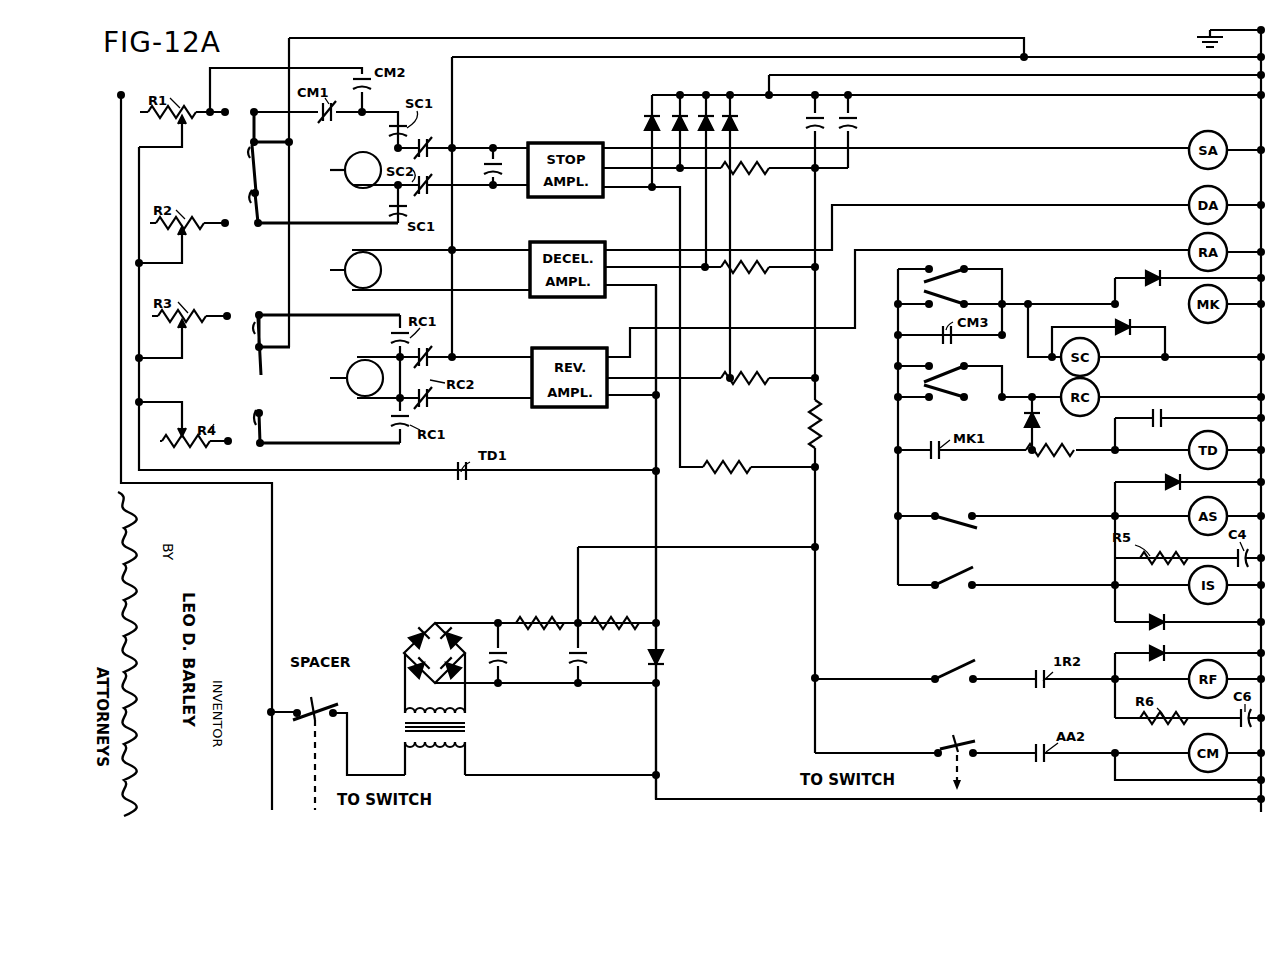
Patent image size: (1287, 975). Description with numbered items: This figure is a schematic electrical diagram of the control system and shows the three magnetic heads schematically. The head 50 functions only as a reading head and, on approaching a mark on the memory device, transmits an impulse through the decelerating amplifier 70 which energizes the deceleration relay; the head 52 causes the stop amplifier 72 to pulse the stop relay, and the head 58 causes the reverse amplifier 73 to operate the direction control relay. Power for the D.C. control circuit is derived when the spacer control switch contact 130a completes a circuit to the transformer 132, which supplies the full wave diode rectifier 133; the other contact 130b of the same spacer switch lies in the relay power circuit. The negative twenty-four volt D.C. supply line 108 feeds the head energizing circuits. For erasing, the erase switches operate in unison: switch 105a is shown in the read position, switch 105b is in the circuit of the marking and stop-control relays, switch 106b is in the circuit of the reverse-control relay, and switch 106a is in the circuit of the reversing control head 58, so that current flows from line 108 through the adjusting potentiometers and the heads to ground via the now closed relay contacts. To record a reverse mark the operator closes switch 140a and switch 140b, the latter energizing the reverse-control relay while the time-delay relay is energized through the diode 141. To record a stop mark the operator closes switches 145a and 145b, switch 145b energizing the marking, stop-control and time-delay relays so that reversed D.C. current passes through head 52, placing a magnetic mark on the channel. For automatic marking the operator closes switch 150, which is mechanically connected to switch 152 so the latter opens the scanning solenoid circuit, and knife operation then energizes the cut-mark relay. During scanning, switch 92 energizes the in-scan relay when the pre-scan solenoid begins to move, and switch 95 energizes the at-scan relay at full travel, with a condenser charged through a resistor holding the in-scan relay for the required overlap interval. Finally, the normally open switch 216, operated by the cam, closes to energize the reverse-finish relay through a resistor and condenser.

The reading head 50 is at (348, 283).
The stop head 52 is at (352, 184).
The reversing control head 58 is at (352, 371).
The decelerating amplifier 70 is at (581, 242).
The stop amplifier 72 is at (587, 143).
The reverse amplifier 73 is at (584, 348).
The switch 92 is at (955, 578).
The switch 95 is at (955, 515).
The erase switch 105a is at (250, 215).
The erase switch 105b is at (970, 300).
The erase switch 106a is at (264, 422).
The erase switch 106b is at (937, 400).
The D.C. supply line 108 is at (658, 503).
The spacer control switch contact 130a is at (329, 706).
The spacer control switch contact 130b is at (318, 794).
The transformer 132 is at (476, 713).
The full wave diode rectifier 133 is at (408, 642).
The switch 140a is at (255, 332).
The switch 140b is at (926, 372).
The diode 141 is at (1040, 421).
The switch 145a is at (248, 134).
The switch 145b is at (955, 262).
The switch 150 is at (945, 745).
The switch 152 is at (955, 778).
The switch 216 is at (955, 672).